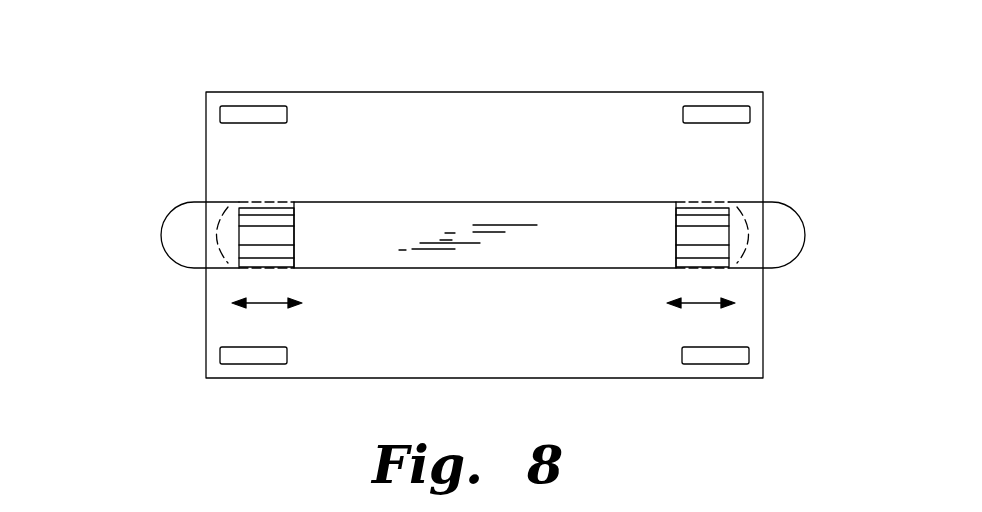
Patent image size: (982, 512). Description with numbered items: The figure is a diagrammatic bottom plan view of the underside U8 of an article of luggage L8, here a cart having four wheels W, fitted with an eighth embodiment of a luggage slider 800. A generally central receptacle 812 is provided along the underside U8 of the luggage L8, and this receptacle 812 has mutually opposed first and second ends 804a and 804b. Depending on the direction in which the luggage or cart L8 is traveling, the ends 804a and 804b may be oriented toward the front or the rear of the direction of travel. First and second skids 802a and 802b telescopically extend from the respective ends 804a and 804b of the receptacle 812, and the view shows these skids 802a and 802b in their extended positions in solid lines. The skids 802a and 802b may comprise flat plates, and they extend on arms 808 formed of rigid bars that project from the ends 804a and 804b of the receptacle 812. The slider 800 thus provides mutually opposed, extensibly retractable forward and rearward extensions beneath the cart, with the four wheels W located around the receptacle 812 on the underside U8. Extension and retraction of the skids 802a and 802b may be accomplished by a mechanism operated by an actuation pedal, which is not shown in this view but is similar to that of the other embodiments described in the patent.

The luggage slider 800 is at (461, 226).
The first skid 802a is at (166, 222).
The second skid 802b is at (800, 217).
The first end 804a is at (307, 202).
The second end 804b is at (657, 202).
The arms 808 is at (283, 251).
The receptacle 812 is at (390, 202).
The wheels W is at (235, 106).
The article of luggage L8 is at (436, 92).
The underside U8 is at (503, 176).